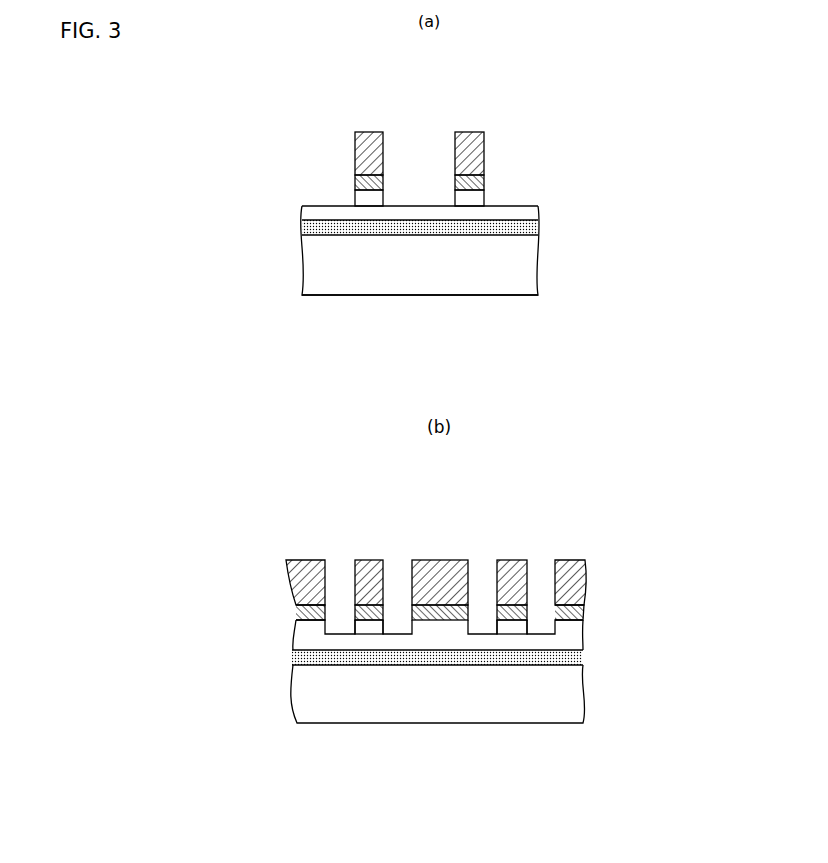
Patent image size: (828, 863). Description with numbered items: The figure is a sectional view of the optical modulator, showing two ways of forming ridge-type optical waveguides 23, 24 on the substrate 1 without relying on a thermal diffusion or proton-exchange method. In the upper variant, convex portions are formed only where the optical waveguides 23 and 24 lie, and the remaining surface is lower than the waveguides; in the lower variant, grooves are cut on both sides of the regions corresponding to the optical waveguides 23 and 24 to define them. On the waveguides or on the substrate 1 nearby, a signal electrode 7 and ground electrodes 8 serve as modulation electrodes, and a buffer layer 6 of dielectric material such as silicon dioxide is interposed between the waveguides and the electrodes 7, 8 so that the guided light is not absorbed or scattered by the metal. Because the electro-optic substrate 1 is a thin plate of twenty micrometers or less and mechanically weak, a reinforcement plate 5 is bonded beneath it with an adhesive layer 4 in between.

The substrate 1 is at (520, 214).
The adhesive layer 4 is at (520, 230).
The reinforcement plate 5 is at (517, 272).
The buffer layer 6 is at (355, 182).
The signal electrode 7 is at (383, 140).
The ground electrode 8 is at (305, 560).
The branched waveguide 23 is at (367, 198).
The branched waveguide 24 is at (467, 198).